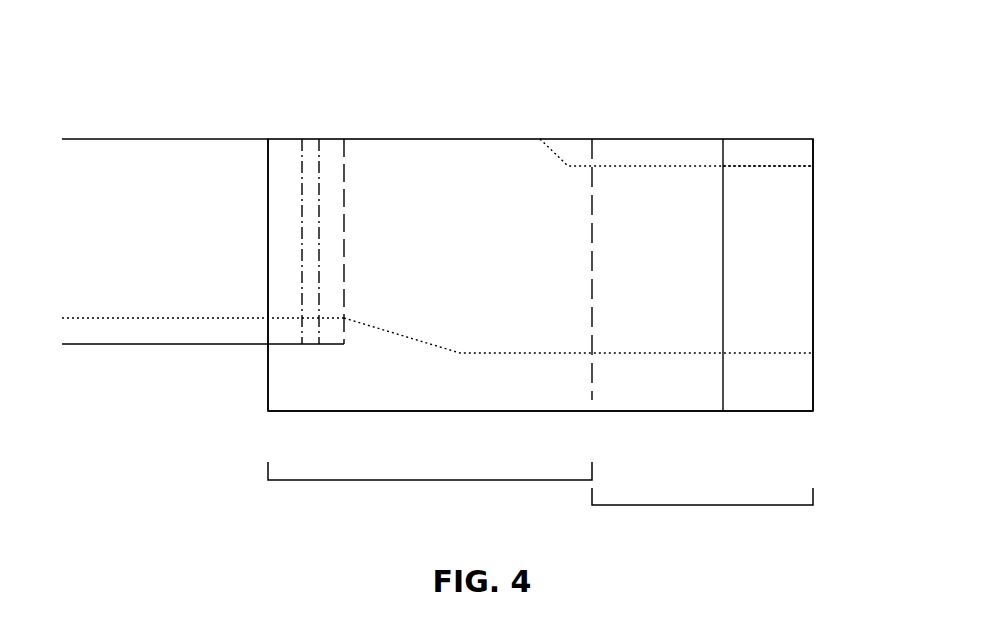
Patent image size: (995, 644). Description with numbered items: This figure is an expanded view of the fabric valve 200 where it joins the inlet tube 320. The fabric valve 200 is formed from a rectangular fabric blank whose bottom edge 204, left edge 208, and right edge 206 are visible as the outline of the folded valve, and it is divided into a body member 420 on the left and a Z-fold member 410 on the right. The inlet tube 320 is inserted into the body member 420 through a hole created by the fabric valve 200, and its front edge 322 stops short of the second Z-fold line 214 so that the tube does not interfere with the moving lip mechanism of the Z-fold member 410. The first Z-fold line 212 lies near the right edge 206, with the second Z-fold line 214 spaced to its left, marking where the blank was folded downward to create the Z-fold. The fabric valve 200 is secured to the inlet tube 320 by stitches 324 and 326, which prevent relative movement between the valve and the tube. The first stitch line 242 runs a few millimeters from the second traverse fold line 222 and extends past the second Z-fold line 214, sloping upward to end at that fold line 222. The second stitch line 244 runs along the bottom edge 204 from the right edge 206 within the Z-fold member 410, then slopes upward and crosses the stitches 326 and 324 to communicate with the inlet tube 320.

The fabric valve 200 is at (485, 139).
The bottom edge 204 is at (447, 412).
The right edge 206 is at (813, 317).
The left edge 208 is at (266, 370).
The first Z-fold line 212 is at (722, 308).
The second Z-fold line 214 is at (590, 327).
The second traverse fold line 222 is at (658, 139).
The first stitch line 242 is at (777, 166).
The second stitch line 244 is at (763, 355).
The inlet tube 320 is at (131, 345).
The front edge 322 is at (344, 158).
The stitch 324 is at (302, 233).
The stitch 326 is at (318, 182).
The Z-fold member 410 is at (702, 517).
The body member 420 is at (430, 491).